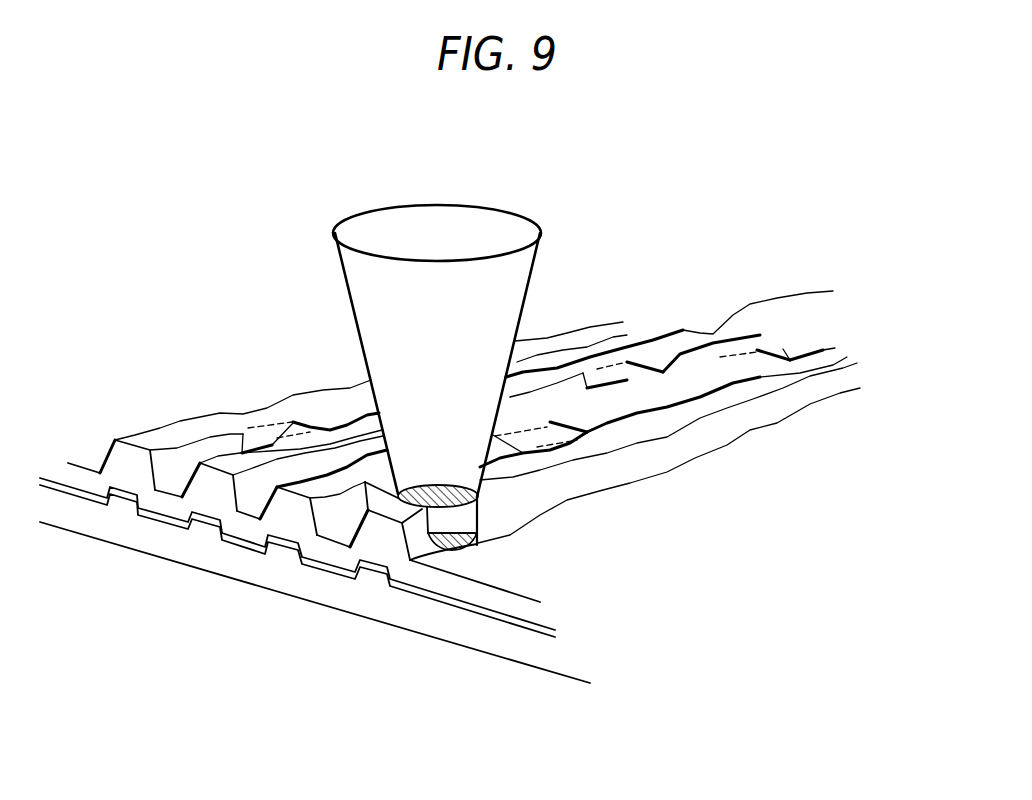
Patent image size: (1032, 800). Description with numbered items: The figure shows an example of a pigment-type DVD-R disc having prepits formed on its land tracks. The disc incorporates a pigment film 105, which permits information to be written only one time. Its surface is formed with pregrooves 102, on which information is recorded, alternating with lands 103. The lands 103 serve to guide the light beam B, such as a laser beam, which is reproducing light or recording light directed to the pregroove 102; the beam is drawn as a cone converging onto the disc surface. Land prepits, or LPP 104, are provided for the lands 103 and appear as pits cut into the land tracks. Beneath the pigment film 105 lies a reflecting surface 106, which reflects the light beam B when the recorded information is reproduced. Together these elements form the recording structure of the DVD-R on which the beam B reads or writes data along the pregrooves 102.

The pregroove 102 is at (207, 500).
The land 103 is at (343, 534).
The LPP 104 is at (780, 357).
The pigment film 105 is at (520, 607).
The reflecting surface 106 is at (513, 622).
The light beam B is at (519, 292).